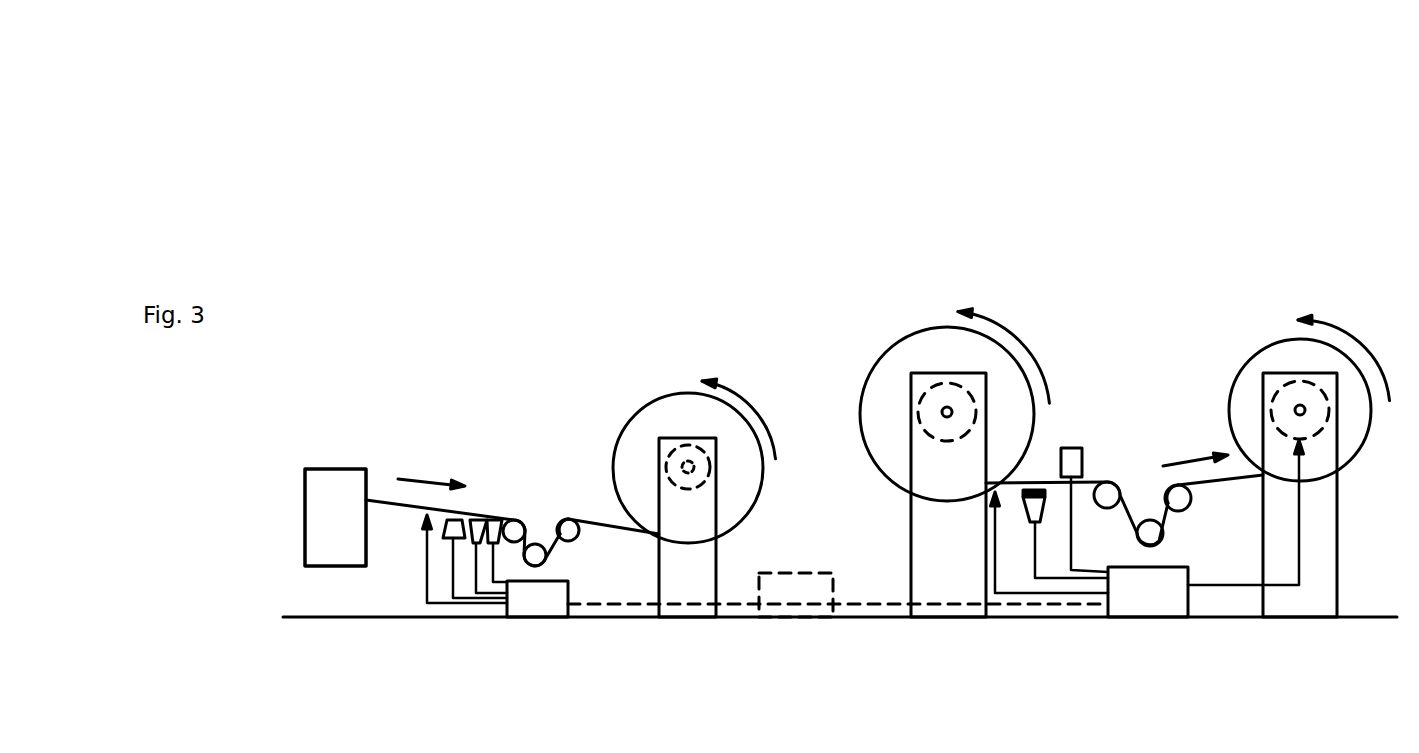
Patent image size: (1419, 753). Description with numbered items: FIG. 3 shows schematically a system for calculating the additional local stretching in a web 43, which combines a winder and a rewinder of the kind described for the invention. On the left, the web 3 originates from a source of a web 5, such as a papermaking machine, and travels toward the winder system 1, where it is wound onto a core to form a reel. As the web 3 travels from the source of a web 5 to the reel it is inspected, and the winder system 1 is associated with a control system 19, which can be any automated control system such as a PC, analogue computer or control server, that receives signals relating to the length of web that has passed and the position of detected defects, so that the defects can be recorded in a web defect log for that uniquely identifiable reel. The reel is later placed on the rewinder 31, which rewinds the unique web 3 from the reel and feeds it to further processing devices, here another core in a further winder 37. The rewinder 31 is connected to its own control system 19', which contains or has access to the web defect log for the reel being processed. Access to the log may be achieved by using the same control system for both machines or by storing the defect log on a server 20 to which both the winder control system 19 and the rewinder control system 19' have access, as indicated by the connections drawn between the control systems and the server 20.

The system for calculating the additional local stretching in a web 43 is at (823, 362).
The winder system 1 is at (636, 472).
The web 3 is at (544, 503).
The source of a web 5 is at (308, 481).
The control system 19 is at (575, 636).
The control system 19' is at (1184, 617).
The server 20 is at (782, 570).
The rewinder 31 is at (925, 427).
The further winder 37 is at (1265, 436).